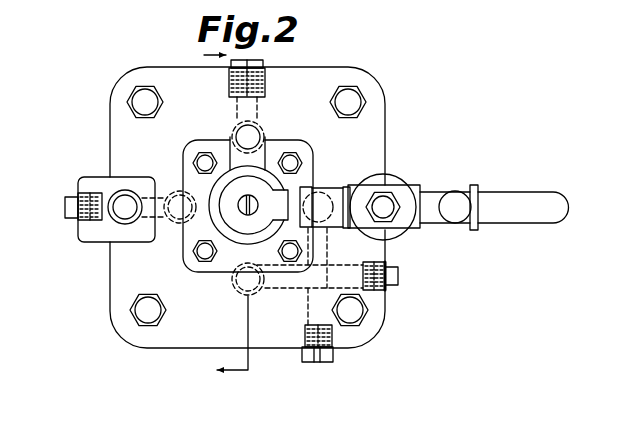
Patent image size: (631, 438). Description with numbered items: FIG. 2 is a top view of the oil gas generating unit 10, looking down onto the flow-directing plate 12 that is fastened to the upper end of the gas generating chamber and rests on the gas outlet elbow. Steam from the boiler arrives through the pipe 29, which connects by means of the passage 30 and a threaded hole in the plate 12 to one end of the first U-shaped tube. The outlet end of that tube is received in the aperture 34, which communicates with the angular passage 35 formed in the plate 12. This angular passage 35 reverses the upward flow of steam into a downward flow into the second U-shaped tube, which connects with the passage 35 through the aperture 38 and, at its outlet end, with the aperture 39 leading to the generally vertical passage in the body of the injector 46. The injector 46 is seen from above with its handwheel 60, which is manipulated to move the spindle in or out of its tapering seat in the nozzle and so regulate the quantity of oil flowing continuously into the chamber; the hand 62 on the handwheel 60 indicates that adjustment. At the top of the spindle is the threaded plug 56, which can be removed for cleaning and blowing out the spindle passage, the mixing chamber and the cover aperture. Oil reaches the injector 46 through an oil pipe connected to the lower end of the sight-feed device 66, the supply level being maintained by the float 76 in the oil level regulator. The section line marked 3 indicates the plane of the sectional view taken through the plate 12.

The oil gas generating unit 10 is at (121, 345).
The flow-directing plate 12 is at (387, 310).
The pipe 29 is at (113, 195).
The passage 30 is at (147, 215).
The aperture 34 is at (385, 242).
The angular passage 35 is at (270, 285).
The aperture 38 is at (238, 286).
The aperture 39 is at (235, 125).
The injector 46 is at (319, 169).
The threaded plug 56 is at (245, 213).
The handwheel 60 is at (213, 192).
The hand 62 is at (258, 192).
The sight-feed device 66 is at (385, 177).
The float 76 is at (448, 210).
The section line 3- 3 is at (215, 213).